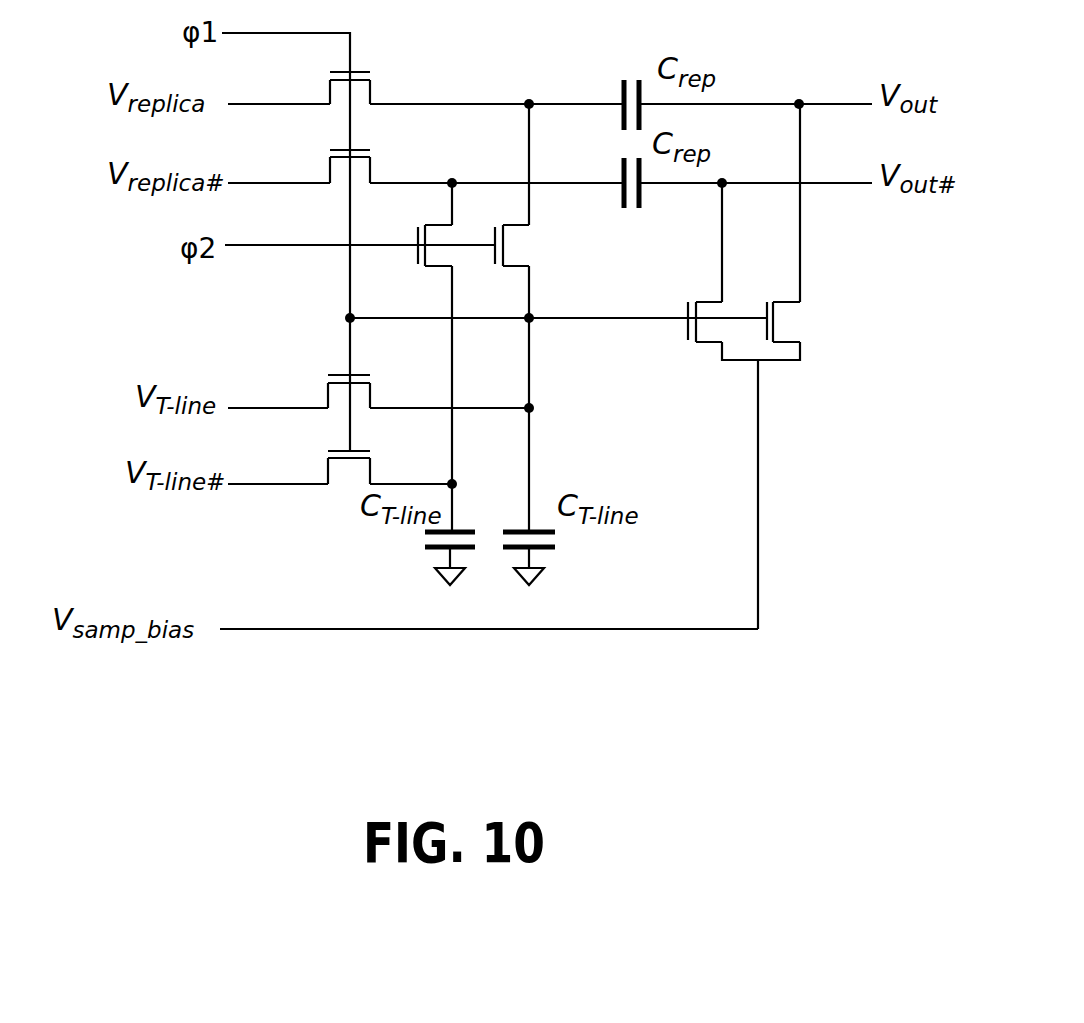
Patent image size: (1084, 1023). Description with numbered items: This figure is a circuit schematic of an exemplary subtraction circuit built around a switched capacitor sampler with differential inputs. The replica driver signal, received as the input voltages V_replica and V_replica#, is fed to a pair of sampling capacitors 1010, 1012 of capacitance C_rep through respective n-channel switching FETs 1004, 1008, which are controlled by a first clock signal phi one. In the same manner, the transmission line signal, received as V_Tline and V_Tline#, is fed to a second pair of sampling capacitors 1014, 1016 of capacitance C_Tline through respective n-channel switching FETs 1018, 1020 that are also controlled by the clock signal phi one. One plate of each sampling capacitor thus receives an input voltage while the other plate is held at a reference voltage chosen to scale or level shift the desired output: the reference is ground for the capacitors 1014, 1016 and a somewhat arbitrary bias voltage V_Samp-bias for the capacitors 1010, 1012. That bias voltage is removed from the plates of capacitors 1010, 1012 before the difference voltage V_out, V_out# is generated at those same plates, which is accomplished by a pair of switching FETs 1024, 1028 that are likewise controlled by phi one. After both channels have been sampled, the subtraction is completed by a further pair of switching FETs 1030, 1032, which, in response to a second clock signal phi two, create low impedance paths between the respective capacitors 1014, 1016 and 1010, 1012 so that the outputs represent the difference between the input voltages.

The n-channel switching FET 1004 is at (376, 75).
The n-channel switching FET 1008 is at (376, 154).
The sampling capacitor 1010 is at (616, 86).
The sampling capacitor 1012 is at (616, 162).
The sampling capacitor 1014 is at (420, 540).
The sampling capacitor 1016 is at (563, 541).
The n-channel switching FET 1018 is at (342, 487).
The n-channel switching FET 1020 is at (322, 378).
The switching FET 1024 is at (706, 350).
The switching FET 1028 is at (798, 318).
The switching FET 1030 is at (420, 272).
The switching FET 1032 is at (508, 272).